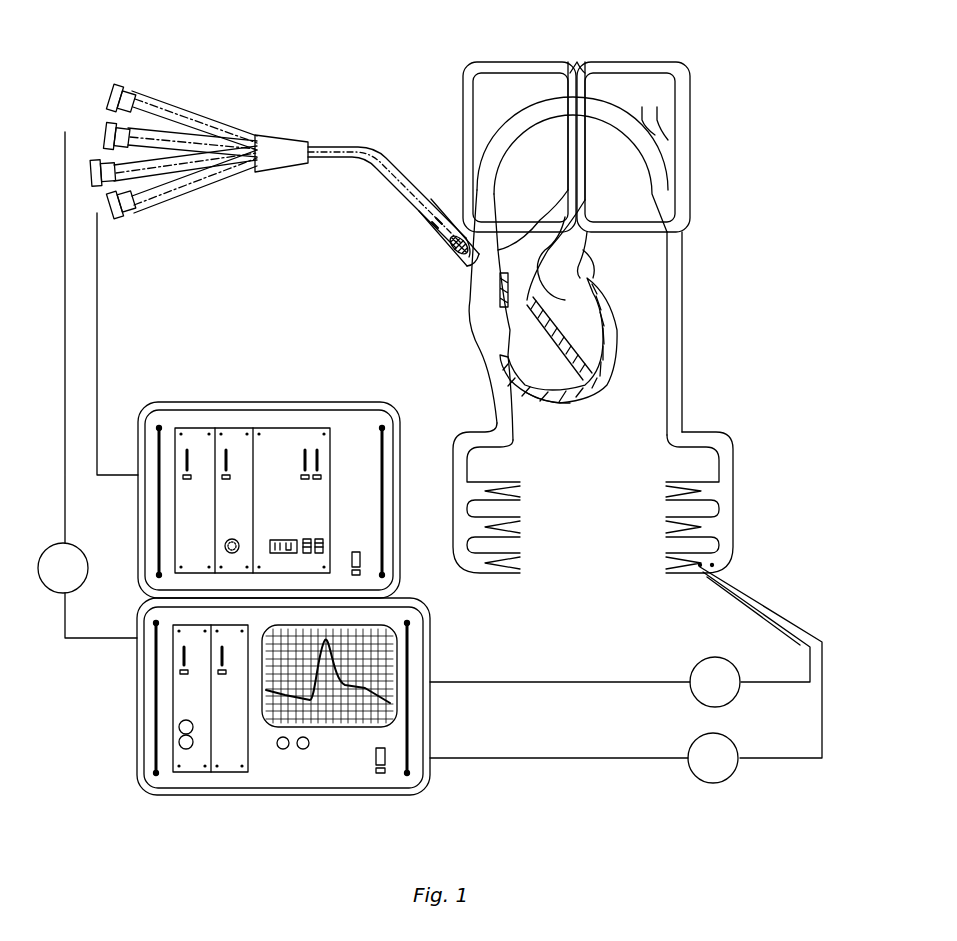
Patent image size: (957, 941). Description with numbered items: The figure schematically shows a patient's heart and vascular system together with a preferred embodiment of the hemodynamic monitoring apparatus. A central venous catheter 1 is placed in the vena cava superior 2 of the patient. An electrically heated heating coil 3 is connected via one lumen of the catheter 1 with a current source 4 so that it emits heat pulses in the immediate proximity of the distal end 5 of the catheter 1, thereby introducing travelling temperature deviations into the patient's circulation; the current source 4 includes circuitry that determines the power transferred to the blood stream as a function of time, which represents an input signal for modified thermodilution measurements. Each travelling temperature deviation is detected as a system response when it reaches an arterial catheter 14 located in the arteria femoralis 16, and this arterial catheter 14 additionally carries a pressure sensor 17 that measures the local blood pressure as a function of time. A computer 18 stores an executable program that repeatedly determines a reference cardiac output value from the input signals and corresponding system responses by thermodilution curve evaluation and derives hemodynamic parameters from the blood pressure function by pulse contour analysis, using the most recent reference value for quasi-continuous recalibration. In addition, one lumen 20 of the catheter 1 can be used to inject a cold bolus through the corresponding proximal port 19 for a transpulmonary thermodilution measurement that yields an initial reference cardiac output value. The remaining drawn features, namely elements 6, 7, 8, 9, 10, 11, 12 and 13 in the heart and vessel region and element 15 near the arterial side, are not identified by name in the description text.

The central venous catheter 1 is at (392, 180).
The vena cava superior 2 is at (443, 200).
The heating coil 3 is at (448, 255).
The current source 4 is at (255, 420).
The distal end 5 is at (470, 262).
The blood vessel 6 is at (483, 330).
The heart apex 7 is at (555, 378).
The pressure gauge 8 is at (70, 558).
The trachea 9 is at (573, 80).
The atrium 10 is at (580, 268).
The ventricle wall 11 is at (583, 318).
The descending vessel 12 is at (683, 352).
The peripheral vessels 13 is at (680, 437).
The arterial catheter 14 is at (727, 592).
The temperature gauge 15 is at (698, 742).
The arteria femoralis 16 is at (715, 566).
The pressure sensor 17 is at (698, 662).
The computer 18 is at (150, 655).
The proximal port 19 is at (132, 95).
The lumen 20 is at (432, 230).